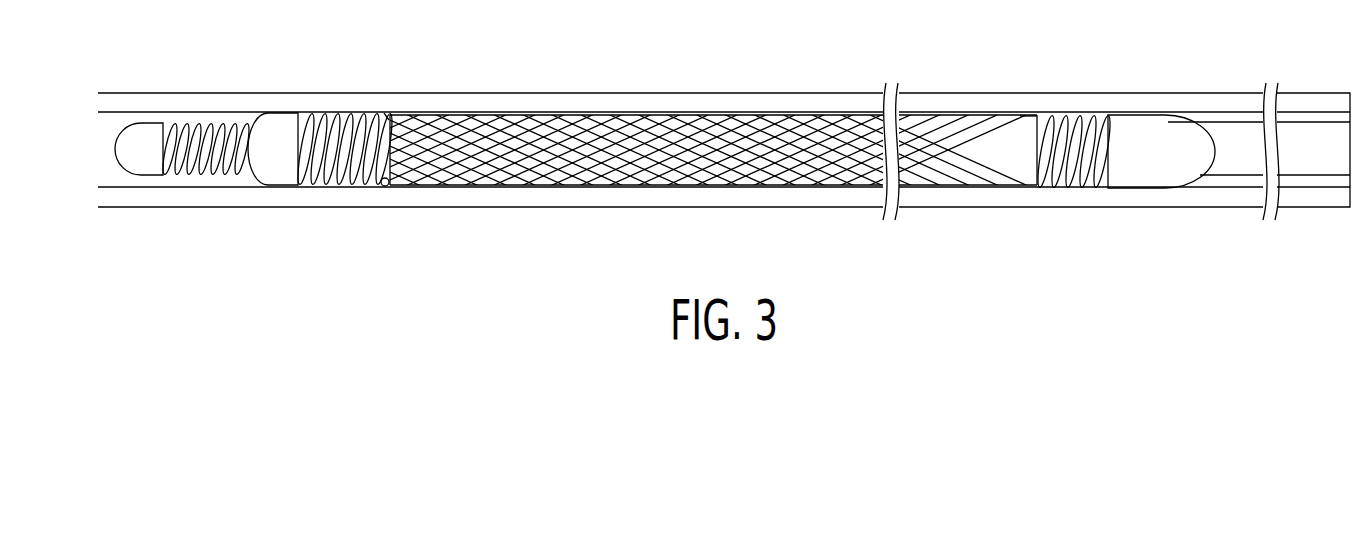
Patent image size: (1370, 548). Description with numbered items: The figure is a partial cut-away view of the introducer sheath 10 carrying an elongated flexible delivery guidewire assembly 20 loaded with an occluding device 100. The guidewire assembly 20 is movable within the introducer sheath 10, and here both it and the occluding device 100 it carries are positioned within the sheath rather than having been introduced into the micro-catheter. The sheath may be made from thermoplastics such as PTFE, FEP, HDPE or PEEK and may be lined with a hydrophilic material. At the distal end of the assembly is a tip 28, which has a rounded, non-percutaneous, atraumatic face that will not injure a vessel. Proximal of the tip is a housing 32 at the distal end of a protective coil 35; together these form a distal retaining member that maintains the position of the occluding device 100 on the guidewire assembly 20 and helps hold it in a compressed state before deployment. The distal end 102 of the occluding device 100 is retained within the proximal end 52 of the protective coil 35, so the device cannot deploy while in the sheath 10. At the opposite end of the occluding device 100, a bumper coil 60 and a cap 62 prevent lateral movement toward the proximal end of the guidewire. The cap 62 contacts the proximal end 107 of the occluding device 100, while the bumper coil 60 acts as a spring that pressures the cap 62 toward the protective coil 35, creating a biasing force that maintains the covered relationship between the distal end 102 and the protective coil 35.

The introducer sheath 10 is at (971, 88).
The delivery guidewire assembly 20 is at (225, 118).
The tip 28 is at (140, 164).
The housing 32 is at (290, 120).
The protective coil 35 is at (347, 117).
The proximal end of the protective coil 52 is at (384, 113).
The bumper coil 60 is at (1087, 117).
The cap 62 is at (1043, 120).
The occluding device 100 is at (785, 117).
The distal end of the occluding device 102 is at (449, 116).
The proximal end of the occluding device 107 is at (1023, 117).